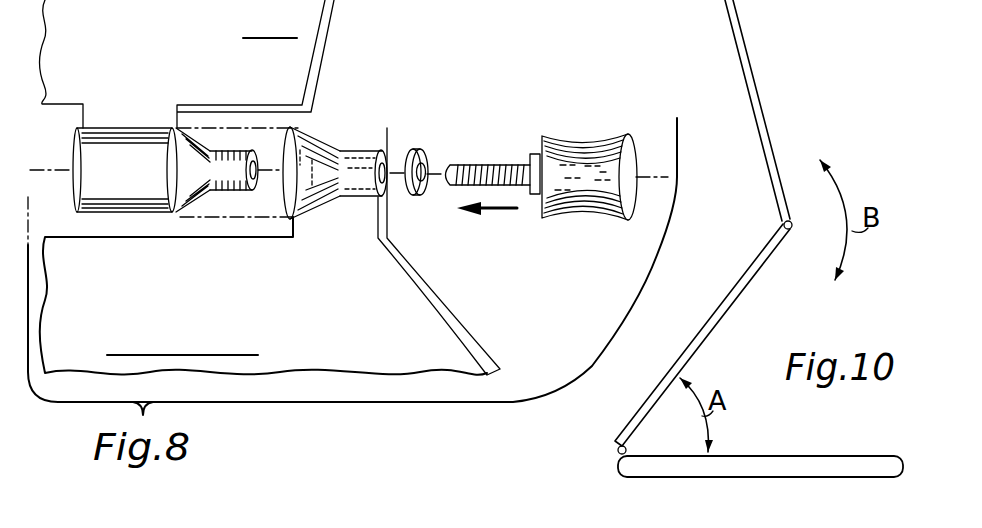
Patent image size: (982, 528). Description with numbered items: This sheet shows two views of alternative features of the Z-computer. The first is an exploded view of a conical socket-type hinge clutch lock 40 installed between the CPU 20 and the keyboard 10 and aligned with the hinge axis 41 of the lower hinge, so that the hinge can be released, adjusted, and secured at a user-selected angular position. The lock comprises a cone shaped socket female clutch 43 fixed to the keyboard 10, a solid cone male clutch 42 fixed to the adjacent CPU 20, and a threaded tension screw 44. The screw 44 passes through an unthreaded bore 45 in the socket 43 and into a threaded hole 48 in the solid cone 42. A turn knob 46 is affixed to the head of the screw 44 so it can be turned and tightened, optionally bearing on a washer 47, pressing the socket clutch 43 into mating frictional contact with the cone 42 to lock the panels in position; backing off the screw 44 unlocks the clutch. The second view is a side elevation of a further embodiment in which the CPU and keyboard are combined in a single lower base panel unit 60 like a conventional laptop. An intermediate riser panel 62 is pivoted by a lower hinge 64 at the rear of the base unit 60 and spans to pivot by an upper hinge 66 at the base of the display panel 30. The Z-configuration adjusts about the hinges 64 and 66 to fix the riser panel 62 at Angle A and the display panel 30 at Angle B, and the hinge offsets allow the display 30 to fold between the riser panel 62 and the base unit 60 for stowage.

In FIG. 8, the keyboard 10 is at (248, 321).
In FIG. 8, the CPU 20 is at (178, 56).
In FIG. 10, the display panel 30 is at (754, 90).
In FIG. 8, the hinge clutch lock 40 is at (432, 120).
In FIG. 8, the hinge axis 41 is at (44, 170).
In FIG. 8, the solid cone male clutch 42 is at (188, 210).
In FIG. 8, the cone shaped socket female clutch 43 is at (332, 203).
In FIG. 8, the threaded tension screw 44 is at (484, 163).
In FIG. 8, the unthreaded bore 45 is at (386, 168).
In FIG. 8, the turn knob 46 is at (583, 146).
In FIG. 8, the washer 47 is at (422, 195).
In FIG. 8, the threaded hole 48 is at (176, 170).
In FIG. 10, the lower base panel unit 60 is at (800, 456).
In FIG. 10, the riser panel 62 is at (732, 306).
In FIG. 10, the lower hinge 64 is at (630, 450).
In FIG. 10, the upper hinge 66 is at (796, 224).